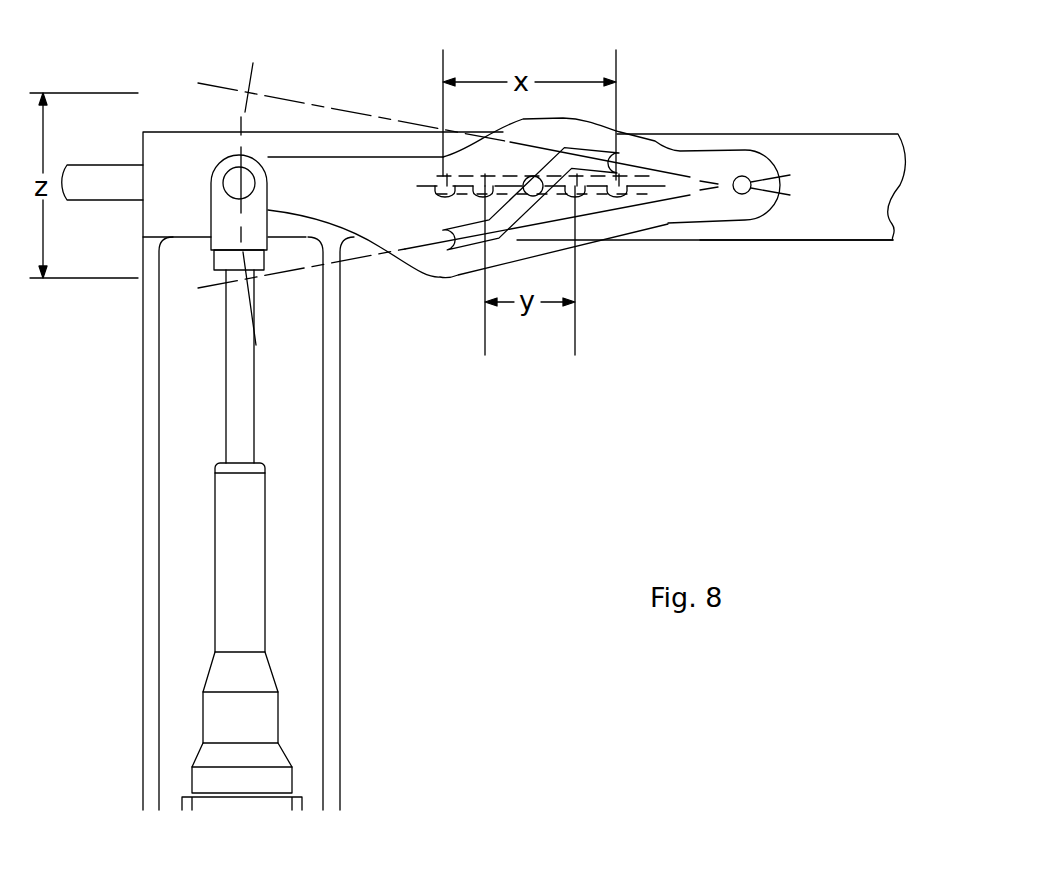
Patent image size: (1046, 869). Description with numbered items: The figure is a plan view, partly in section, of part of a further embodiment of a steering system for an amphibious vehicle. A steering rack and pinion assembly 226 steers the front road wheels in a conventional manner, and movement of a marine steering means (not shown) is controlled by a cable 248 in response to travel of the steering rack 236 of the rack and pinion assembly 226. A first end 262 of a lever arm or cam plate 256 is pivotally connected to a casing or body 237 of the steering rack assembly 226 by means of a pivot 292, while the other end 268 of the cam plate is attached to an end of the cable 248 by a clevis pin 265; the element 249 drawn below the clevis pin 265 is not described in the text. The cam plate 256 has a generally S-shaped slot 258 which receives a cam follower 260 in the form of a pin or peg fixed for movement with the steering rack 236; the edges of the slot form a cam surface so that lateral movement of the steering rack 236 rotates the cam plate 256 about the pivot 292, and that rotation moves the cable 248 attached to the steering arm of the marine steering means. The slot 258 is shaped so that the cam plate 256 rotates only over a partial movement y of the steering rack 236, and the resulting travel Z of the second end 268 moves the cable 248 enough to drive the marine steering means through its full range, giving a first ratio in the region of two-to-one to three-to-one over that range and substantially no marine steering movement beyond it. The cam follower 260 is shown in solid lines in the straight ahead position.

The steering rack and pinion assembly 226 is at (870, 150).
The steering rack 236 is at (113, 177).
The casing or body 237 is at (860, 240).
The cable 248 is at (238, 407).
The hydraulic cylinder 249 is at (252, 628).
The lever arm or cam plate 256 is at (405, 246).
The S shaped slot 258 is at (611, 170).
The cam follower 260 is at (540, 195).
The first end of cam plate 262 is at (662, 152).
The clevis pin 265 is at (225, 192).
The other end of cam plate 268 is at (288, 176).
The pivot 292 is at (750, 192).